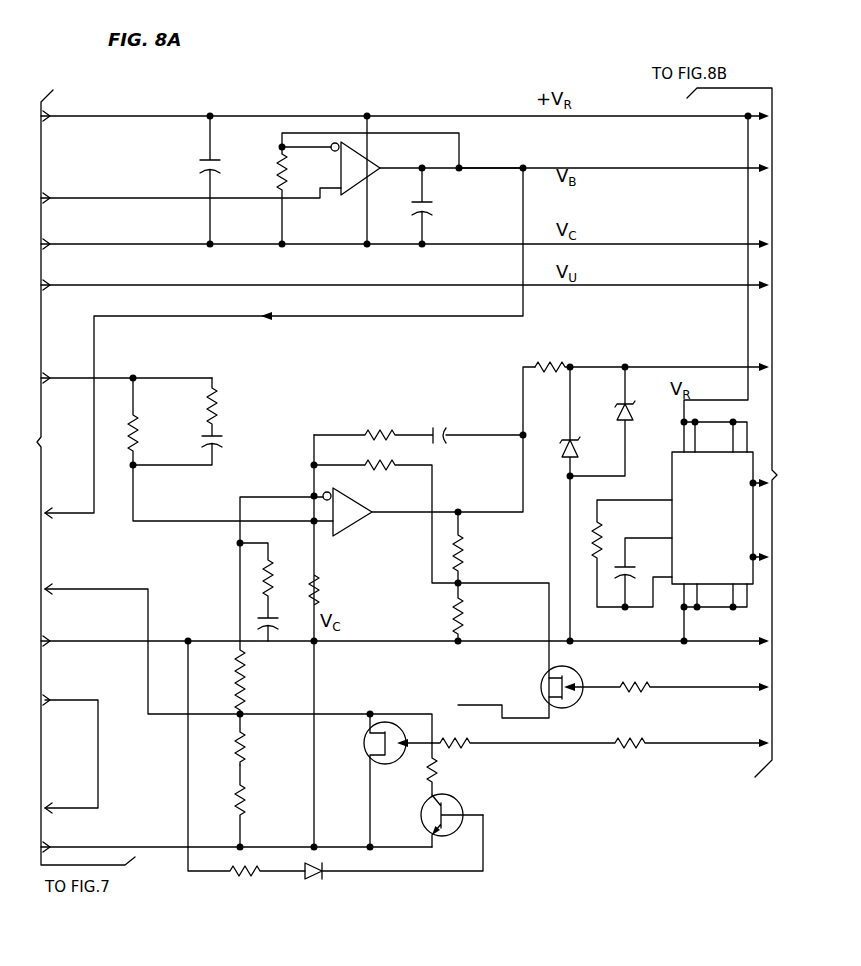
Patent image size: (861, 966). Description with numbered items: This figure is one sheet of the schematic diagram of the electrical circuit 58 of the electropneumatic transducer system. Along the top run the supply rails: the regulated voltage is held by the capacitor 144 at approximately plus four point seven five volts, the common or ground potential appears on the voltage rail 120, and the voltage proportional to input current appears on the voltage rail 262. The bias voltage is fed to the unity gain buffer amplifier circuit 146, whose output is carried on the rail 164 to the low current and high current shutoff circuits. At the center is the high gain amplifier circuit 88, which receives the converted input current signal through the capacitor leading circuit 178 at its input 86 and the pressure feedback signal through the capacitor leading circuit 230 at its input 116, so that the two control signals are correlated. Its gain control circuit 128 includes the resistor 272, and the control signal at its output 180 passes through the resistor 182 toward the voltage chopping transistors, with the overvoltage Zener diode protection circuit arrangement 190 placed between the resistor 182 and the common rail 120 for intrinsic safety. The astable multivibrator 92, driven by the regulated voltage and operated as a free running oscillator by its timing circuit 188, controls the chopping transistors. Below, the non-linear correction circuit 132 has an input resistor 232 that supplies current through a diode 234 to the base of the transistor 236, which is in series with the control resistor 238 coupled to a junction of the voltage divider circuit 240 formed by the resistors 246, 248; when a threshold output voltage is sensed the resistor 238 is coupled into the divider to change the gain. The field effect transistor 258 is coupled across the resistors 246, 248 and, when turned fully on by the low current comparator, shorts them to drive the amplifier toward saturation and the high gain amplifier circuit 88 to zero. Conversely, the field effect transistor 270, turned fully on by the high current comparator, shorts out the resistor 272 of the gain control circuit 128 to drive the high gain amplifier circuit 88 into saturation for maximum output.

The electrical circuit 58 is at (342, 105).
The capacitor 144 is at (200, 162).
The unity gain buffer amplifier circuit 146 is at (358, 220).
The rail 164 is at (478, 166).
The voltage rail 262 is at (648, 287).
The capacitor leading circuit 178 is at (219, 412).
The resistor 182 is at (549, 366).
The overvoltage Zener diode protection circuit arrangement 190 is at (605, 406).
The input 116 is at (298, 496).
The high gain amplifier circuit 88 is at (375, 498).
The gain control circuit 128 is at (433, 490).
The output 180 is at (442, 510).
The input 86 is at (318, 527).
The capacitor leading circuit 230 is at (250, 588).
The voltage divider circuit 240 is at (250, 698).
The resistor 246 is at (243, 746).
The resistor 248 is at (243, 799).
The resistor 272 is at (450, 618).
The voltage rail 120 is at (403, 630).
The field effect transistor 270 is at (583, 673).
The field effect transistor 258 is at (389, 761).
The control resistor 238 is at (437, 777).
The transistor 236 is at (463, 798).
The input resistor 232 is at (242, 879).
The diode 234 is at (311, 880).
The non-linear correction circuit 132 is at (410, 872).
The timing circuit 188 is at (648, 539).
The astable multivibrator 92 is at (722, 566).